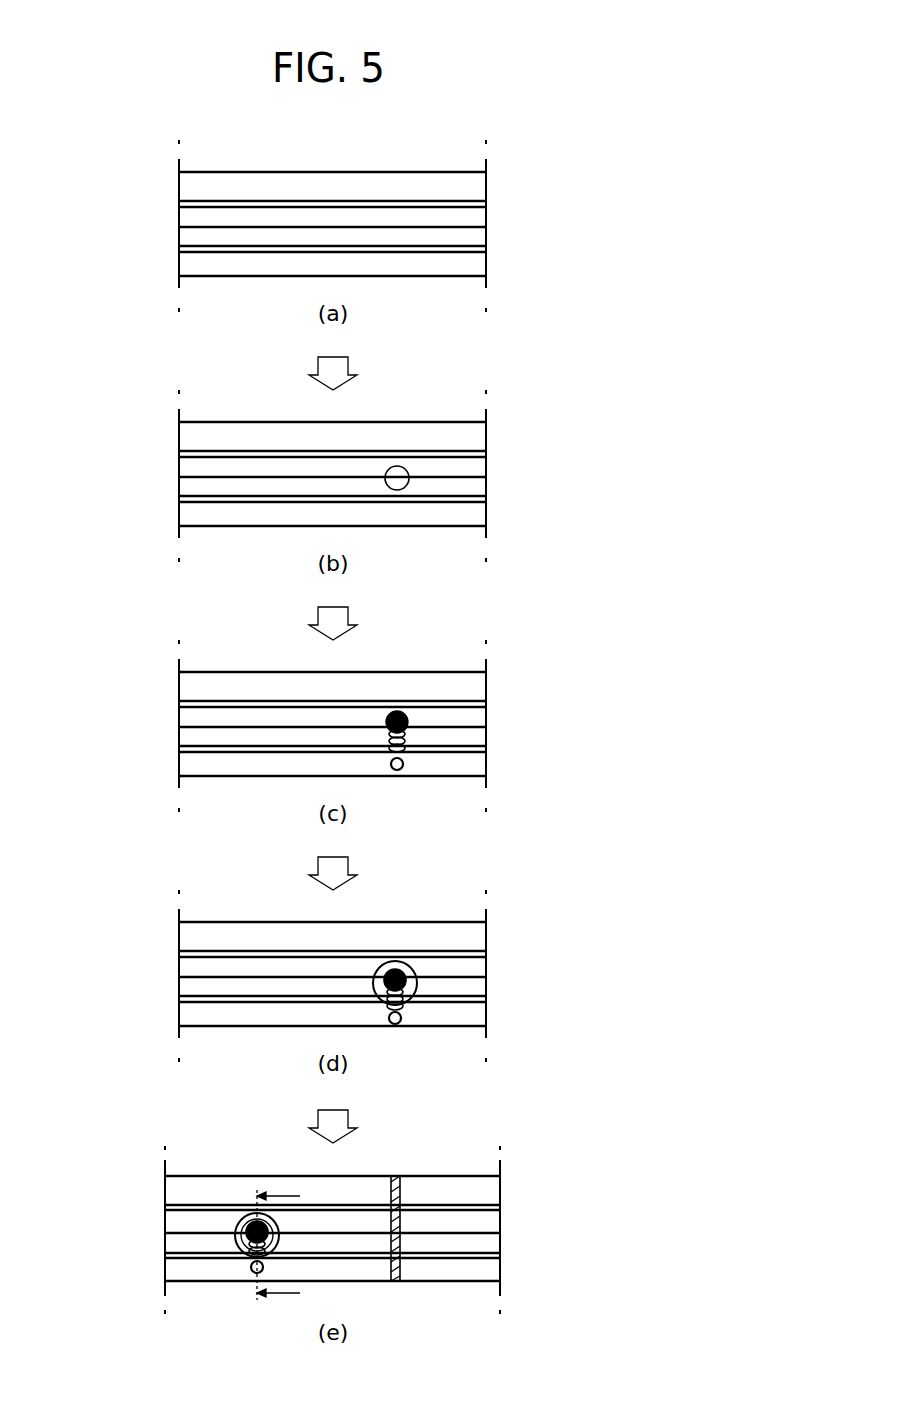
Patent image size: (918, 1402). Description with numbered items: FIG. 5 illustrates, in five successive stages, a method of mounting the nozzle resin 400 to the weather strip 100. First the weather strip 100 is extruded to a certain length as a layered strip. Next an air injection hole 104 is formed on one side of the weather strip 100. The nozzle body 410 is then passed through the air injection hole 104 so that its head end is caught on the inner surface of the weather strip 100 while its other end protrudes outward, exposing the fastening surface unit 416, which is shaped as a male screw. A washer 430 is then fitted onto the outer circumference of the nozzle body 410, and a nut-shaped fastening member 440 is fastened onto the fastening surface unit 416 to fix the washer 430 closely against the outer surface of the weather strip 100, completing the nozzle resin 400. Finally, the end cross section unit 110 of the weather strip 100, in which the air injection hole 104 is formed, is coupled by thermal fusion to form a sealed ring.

The weather strip 100 is at (468, 215).
The air injection hole 104 is at (402, 490).
The fastening surface unit 416 is at (400, 726).
The nozzle body 410 is at (404, 765).
The washer 430 is at (410, 965).
The fastening member 440 is at (238, 1228).
The nozzle resin 400 is at (238, 1265).
The end cross section unit 110 is at (400, 1220).